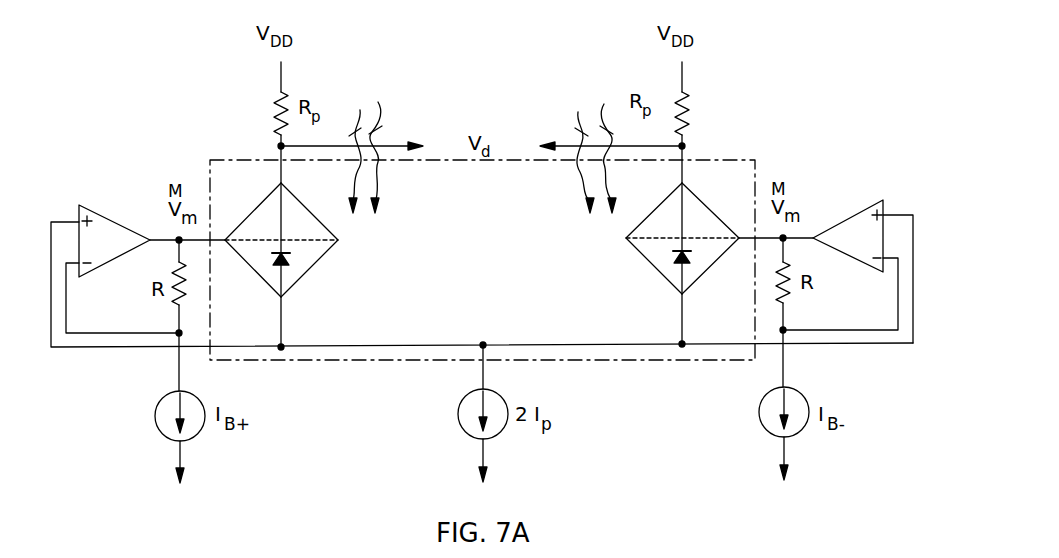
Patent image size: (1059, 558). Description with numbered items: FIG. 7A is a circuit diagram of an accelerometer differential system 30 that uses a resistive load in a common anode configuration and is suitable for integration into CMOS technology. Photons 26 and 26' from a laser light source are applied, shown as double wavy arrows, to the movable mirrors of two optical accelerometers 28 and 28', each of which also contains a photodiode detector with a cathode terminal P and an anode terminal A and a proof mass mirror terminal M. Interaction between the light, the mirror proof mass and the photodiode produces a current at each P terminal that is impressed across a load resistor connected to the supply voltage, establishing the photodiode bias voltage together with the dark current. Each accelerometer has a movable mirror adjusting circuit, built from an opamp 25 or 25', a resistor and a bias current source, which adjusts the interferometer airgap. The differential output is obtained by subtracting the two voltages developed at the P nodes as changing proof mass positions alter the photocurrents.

The opamp 25 is at (114, 215).
The opamp 25' is at (848, 209).
The photons 26 is at (371, 140).
The photons 26' is at (597, 140).
The optical accelerometer 28 is at (324, 241).
The optical accelerometer 28' is at (639, 241).
The accelerometer differential system 30 is at (772, 128).